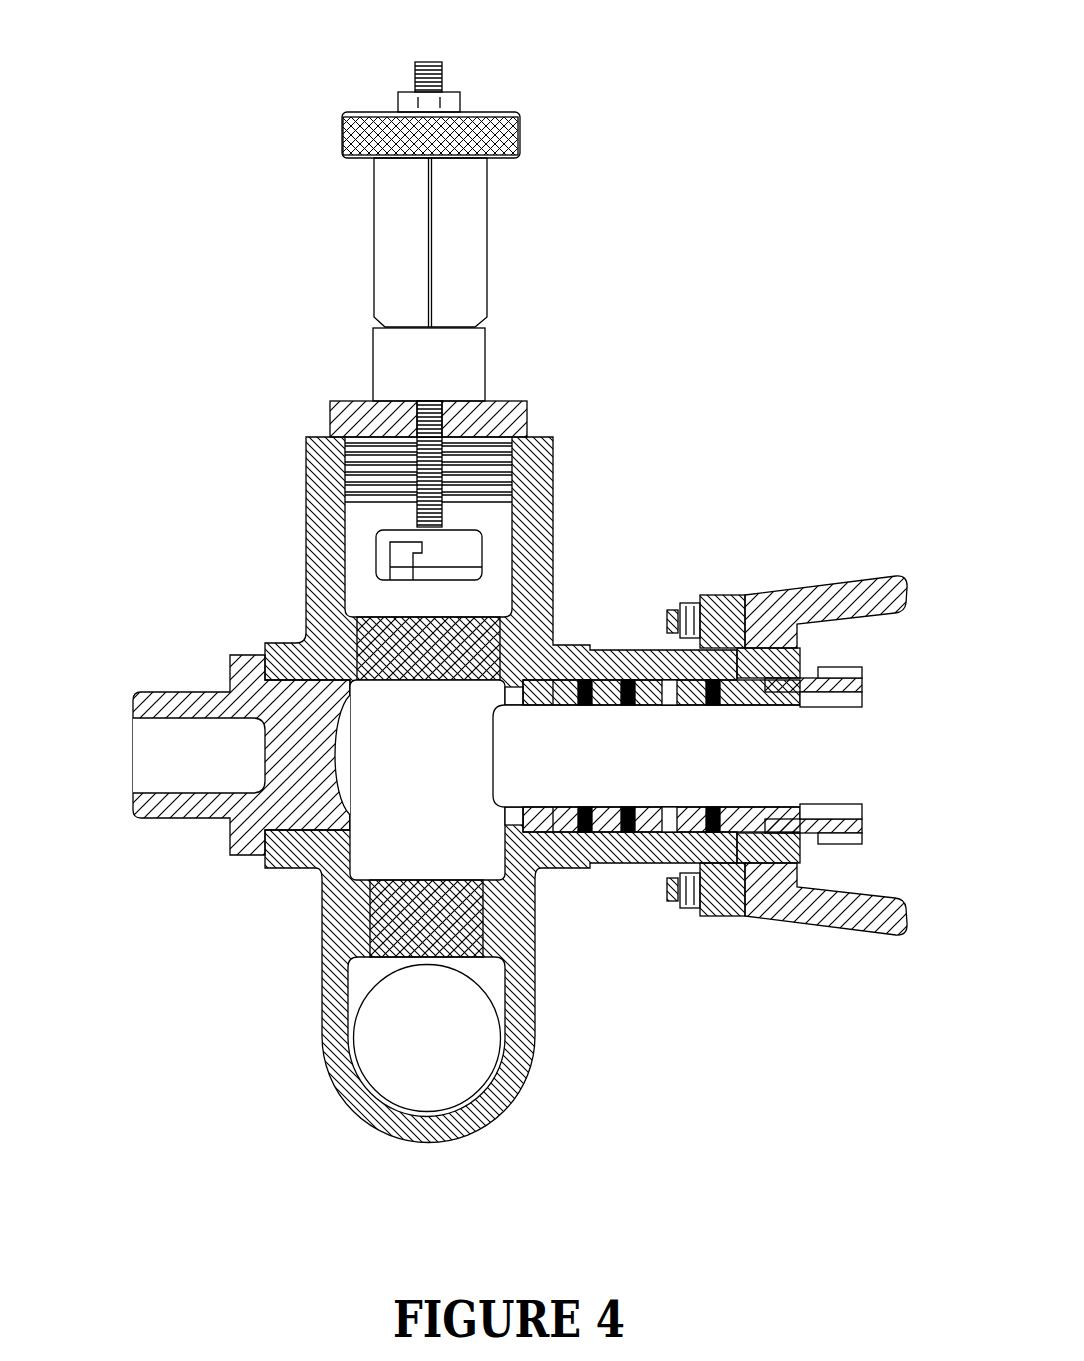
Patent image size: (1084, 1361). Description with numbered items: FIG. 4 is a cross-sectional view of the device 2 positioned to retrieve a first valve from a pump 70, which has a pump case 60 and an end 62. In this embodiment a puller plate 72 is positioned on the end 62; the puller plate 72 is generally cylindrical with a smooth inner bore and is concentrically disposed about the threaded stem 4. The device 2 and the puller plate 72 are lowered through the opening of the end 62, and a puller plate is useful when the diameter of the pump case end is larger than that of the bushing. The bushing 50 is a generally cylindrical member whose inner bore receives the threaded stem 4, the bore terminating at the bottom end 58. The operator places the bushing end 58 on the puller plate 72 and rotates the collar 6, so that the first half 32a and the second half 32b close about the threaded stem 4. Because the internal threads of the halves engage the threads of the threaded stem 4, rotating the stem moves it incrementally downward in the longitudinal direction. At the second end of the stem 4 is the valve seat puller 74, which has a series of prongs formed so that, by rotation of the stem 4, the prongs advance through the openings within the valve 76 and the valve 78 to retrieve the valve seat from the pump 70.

The device 2 is at (520, 575).
The threaded stem 4 is at (476, 72).
The collar 6 is at (508, 112).
The first half 32a is at (373, 200).
The second half 32b is at (487, 200).
The bushing 50 is at (385, 365).
The bottom end 58 is at (345, 476).
The pump case 60 is at (320, 504).
The end 62 is at (325, 437).
The pump 70 is at (753, 984).
The puller plate 72 is at (515, 413).
The valve seat puller 74 is at (472, 552).
The valve 76 is at (357, 618).
The valve 78 is at (425, 932).